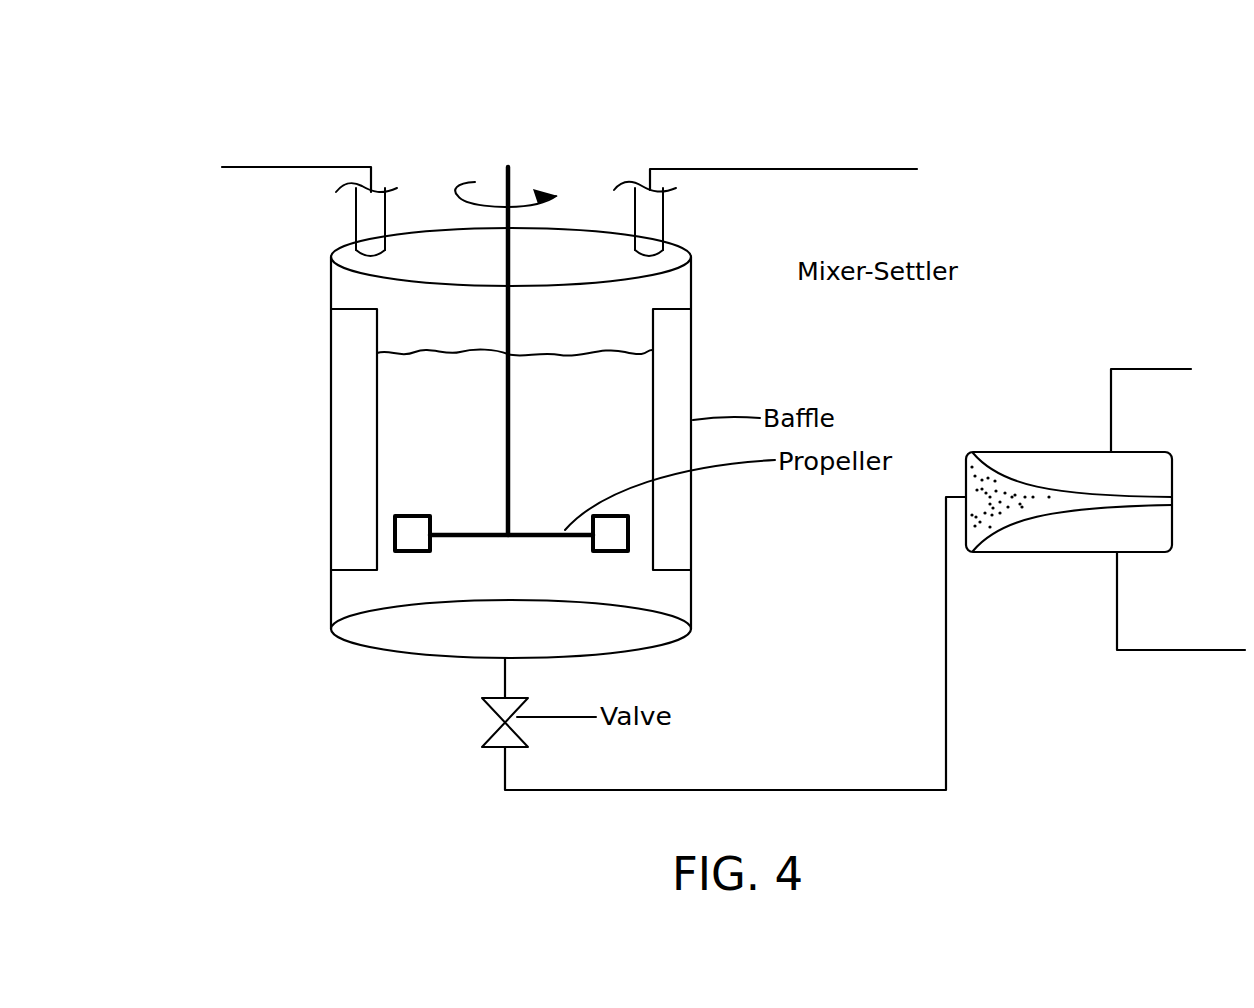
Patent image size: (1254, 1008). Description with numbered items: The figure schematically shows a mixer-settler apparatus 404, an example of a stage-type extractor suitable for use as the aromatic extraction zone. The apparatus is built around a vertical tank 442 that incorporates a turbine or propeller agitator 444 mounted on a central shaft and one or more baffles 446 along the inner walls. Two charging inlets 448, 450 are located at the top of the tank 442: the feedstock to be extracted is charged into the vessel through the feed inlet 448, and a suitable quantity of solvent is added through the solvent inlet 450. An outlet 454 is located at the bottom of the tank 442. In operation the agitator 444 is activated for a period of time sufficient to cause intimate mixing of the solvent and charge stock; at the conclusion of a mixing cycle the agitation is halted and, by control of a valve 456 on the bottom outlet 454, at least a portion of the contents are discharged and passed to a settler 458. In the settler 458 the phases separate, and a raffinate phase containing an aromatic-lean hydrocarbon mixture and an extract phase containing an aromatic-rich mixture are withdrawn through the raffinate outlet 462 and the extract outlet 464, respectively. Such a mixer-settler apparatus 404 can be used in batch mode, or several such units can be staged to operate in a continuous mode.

The mixer-settler apparatus 404 is at (181, 113).
The vertical tank 442 is at (527, 633).
The propeller agitator 444 is at (525, 530).
The baffle 446 is at (343, 414).
The charging inlet 448 is at (765, 195).
The charging inlet 450 is at (306, 194).
The outlet 454 is at (505, 677).
The valve 456 is at (498, 717).
The settler 458 is at (1083, 539).
The raffinate outlet 462 is at (1203, 688).
The extract outlet 464 is at (1168, 401).